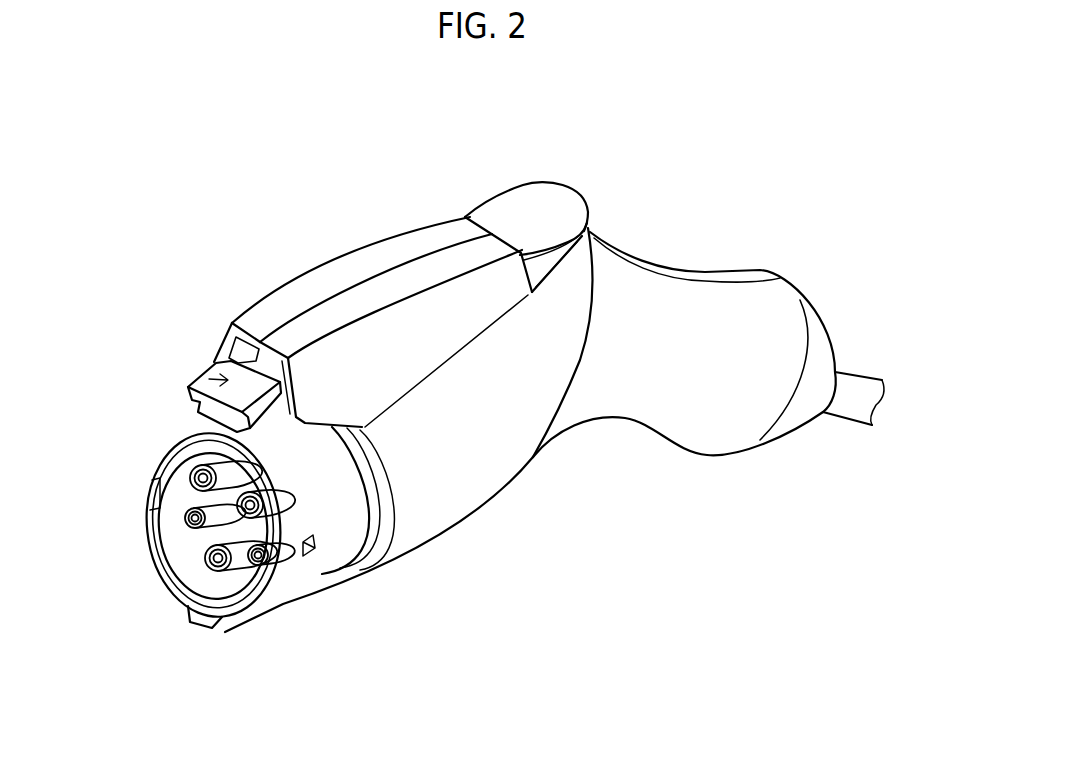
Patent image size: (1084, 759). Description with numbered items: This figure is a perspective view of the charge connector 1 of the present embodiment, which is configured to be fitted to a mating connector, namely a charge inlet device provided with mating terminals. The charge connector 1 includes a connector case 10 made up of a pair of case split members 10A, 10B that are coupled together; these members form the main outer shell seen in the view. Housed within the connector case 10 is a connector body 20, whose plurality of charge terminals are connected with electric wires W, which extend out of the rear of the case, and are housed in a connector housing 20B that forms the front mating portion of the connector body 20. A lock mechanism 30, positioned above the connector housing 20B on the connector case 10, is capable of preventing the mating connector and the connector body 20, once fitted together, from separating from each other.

The charge connector 1 is at (289, 140).
The connector case 10 is at (408, 190).
The case split member 10A is at (322, 283).
The case split member 10B is at (379, 288).
The connector body 20 is at (268, 612).
The connector housing 20B is at (190, 569).
The lock mechanism 30 is at (202, 380).
The electric wires W is at (847, 402).